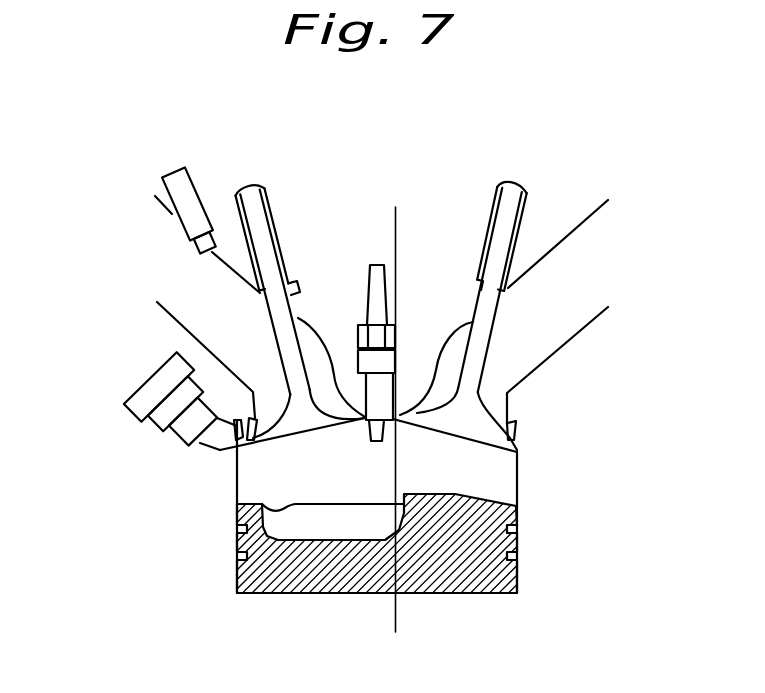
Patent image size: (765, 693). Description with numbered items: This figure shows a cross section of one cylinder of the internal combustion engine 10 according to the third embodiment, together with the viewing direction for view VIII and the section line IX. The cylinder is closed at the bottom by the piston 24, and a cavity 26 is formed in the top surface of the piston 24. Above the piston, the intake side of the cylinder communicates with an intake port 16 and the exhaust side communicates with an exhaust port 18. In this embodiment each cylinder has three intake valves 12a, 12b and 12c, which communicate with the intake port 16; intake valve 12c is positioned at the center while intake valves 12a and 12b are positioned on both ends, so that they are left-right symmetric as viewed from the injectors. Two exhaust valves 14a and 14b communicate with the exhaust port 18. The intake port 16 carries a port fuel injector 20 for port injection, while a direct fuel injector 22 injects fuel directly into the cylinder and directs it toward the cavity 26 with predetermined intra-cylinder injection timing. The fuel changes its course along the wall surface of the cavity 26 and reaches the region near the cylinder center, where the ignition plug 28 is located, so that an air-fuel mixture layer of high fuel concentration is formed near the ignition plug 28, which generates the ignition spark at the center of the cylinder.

The internal combustion engine 10 is at (527, 493).
The intake valve 12a is at (311, 274).
The intake valve 12b is at (253, 187).
The intake valve 12c is at (237, 460).
The exhaust valve 14a is at (537, 286).
The exhaust valve 14b is at (510, 195).
The intake port 16 is at (177, 298).
The exhaust port 18 is at (568, 333).
The port fuel injector 20 is at (185, 167).
The direct fuel injector 22 is at (128, 410).
The piston 24 is at (236, 588).
The cavity 26 is at (312, 513).
The ignition plug 28 is at (362, 290).
The view VIII is at (378, 208).
The section line IX is at (407, 237).